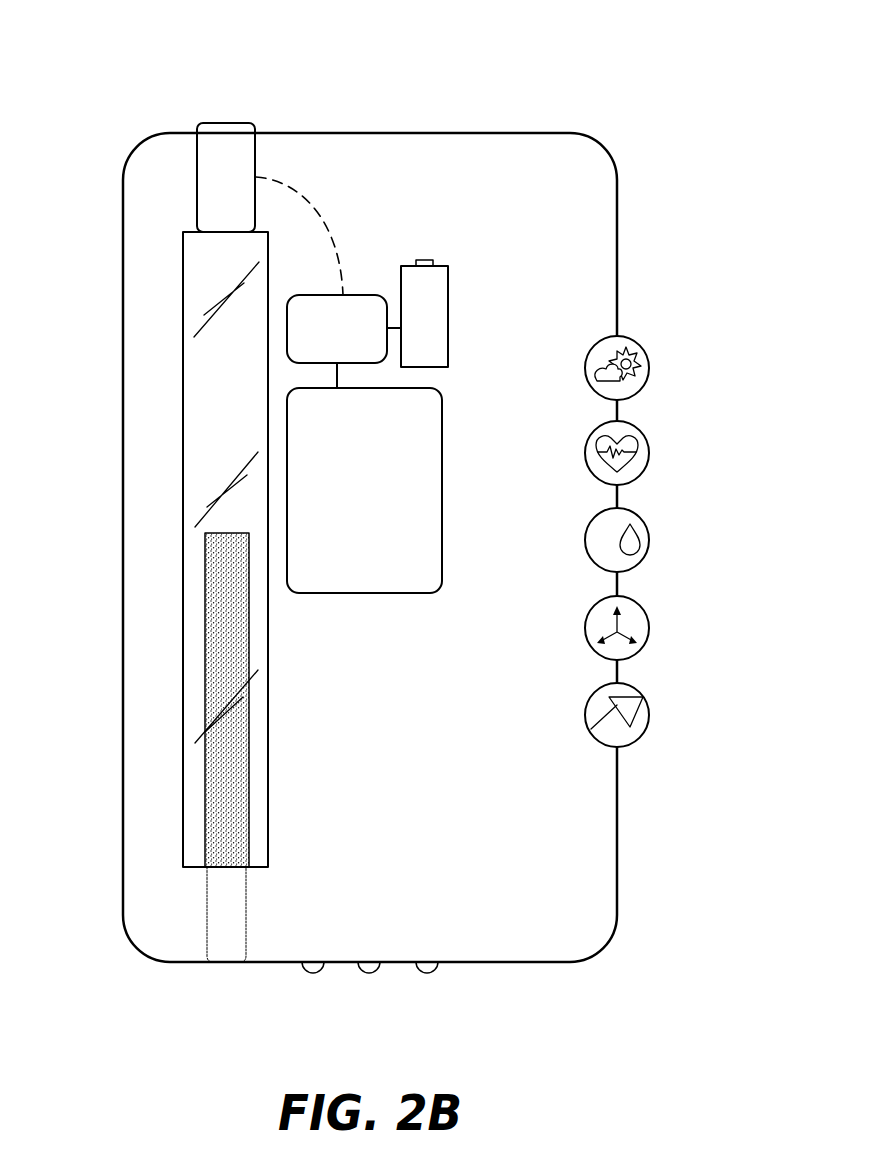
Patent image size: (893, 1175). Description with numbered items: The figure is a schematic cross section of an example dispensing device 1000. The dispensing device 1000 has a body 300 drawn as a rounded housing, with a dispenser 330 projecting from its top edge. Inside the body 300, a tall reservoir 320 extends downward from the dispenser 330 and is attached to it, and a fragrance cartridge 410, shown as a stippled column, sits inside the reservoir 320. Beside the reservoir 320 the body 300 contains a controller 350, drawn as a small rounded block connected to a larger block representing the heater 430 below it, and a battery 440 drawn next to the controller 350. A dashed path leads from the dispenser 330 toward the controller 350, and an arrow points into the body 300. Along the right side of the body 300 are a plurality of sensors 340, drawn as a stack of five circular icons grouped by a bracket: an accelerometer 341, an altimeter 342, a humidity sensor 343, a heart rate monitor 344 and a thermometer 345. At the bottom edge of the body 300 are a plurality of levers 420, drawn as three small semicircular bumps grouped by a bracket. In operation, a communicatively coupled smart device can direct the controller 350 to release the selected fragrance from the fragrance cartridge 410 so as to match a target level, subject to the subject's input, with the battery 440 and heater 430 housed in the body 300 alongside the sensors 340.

The dispensing device 1000 is at (131, 56).
The body 300 is at (365, 240).
The reservoir 320 is at (217, 390).
The dispenser 330 is at (230, 125).
The sensors 340 is at (678, 540).
The accelerometer 341 is at (648, 715).
The altimeter 342 is at (649, 626).
The humidity sensor 343 is at (649, 538).
The heart rate monitor 344 is at (649, 451).
The thermometer 345 is at (649, 366).
The controller 350 is at (367, 307).
The fragrance cartridge 410 is at (217, 663).
The levers 420 is at (448, 970).
The heater 430 is at (298, 458).
The battery 440 is at (446, 281).